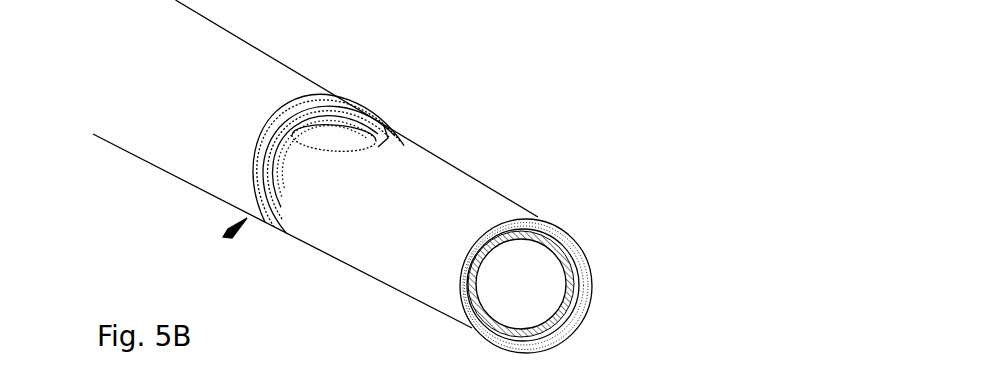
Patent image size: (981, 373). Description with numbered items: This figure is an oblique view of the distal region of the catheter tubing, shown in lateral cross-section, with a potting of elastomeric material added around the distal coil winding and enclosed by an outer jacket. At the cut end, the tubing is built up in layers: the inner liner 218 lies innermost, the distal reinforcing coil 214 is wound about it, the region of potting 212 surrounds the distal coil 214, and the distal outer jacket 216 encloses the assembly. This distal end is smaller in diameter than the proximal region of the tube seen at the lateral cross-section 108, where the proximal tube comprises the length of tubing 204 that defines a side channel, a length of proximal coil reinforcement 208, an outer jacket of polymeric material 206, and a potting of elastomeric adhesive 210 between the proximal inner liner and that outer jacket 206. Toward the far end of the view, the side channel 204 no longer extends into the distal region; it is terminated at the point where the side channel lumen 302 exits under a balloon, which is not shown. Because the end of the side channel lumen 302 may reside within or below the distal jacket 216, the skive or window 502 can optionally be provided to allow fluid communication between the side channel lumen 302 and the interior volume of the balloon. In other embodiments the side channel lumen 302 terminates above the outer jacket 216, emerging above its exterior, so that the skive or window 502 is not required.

The lateral cross-section 108 is at (204, 238).
The length of tubing defining side channel 204 is at (365, 146).
The outer jacket of polymeric material 206 is at (282, 231).
The proximal coil reinforcement 208 is at (317, 120).
The potting of elastomeric adhesive 210 is at (325, 116).
The region of potting 212 is at (543, 259).
The distal reinforcing coil 214 is at (488, 338).
The distal outer jacket 216 is at (386, 263).
The inner liner 218 is at (536, 292).
The side channel lumen 302 is at (361, 113).
The skive or window 502 is at (297, 200).